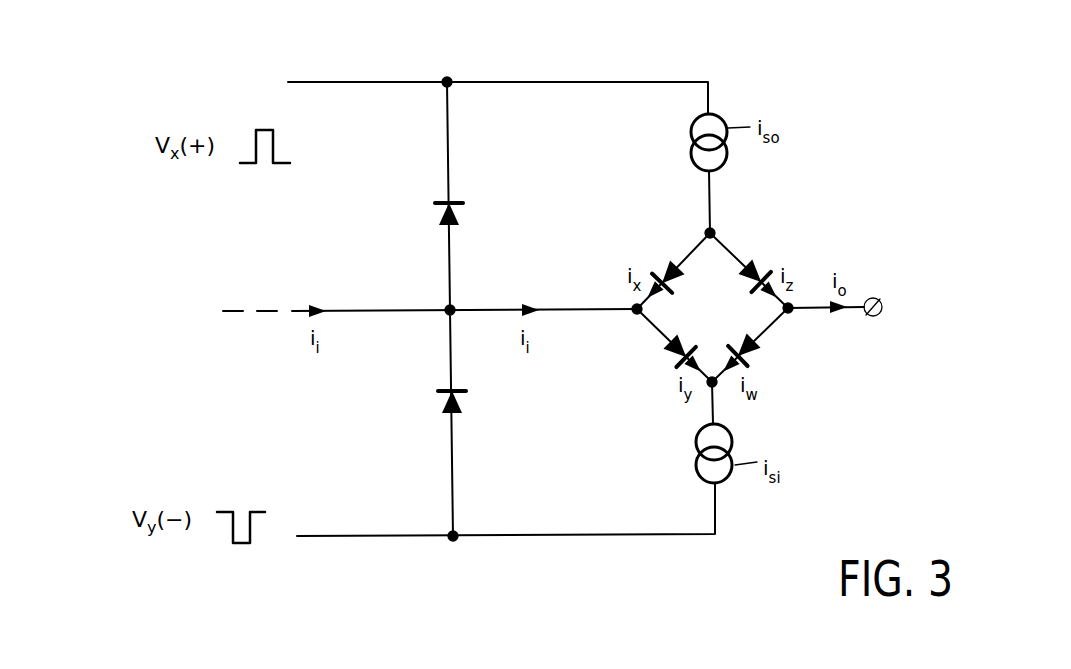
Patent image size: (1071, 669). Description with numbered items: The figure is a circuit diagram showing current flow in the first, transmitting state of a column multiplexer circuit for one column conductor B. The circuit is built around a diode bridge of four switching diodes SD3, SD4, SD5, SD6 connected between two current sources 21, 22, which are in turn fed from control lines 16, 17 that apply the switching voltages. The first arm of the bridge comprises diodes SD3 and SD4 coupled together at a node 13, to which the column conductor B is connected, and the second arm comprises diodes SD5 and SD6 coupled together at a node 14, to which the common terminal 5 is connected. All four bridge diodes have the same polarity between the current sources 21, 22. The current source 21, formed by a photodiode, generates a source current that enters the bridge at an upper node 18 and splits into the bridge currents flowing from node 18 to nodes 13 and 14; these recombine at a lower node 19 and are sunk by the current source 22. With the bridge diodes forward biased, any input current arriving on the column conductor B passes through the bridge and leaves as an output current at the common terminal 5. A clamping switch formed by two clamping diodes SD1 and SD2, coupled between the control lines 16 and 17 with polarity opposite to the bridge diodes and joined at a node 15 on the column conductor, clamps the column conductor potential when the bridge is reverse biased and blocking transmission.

The common terminal 5 is at (882, 307).
The node of the first arm 13 is at (632, 312).
The node of the second arm 14 is at (795, 312).
The node 15 is at (455, 306).
The control line 16 is at (538, 80).
The control line 17 is at (545, 546).
The node 18 is at (716, 231).
The node 19 is at (712, 376).
The current source 21 is at (690, 155).
The current source 22 is at (695, 473).
The clamping diode SD1 is at (437, 213).
The clamping diode SD2 is at (440, 400).
The switching diode SD3 is at (672, 252).
The switching diode SD4 is at (664, 352).
The switching diode SD5 is at (762, 262).
The switching diode SD6 is at (768, 354).
The column conductor B is at (352, 305).